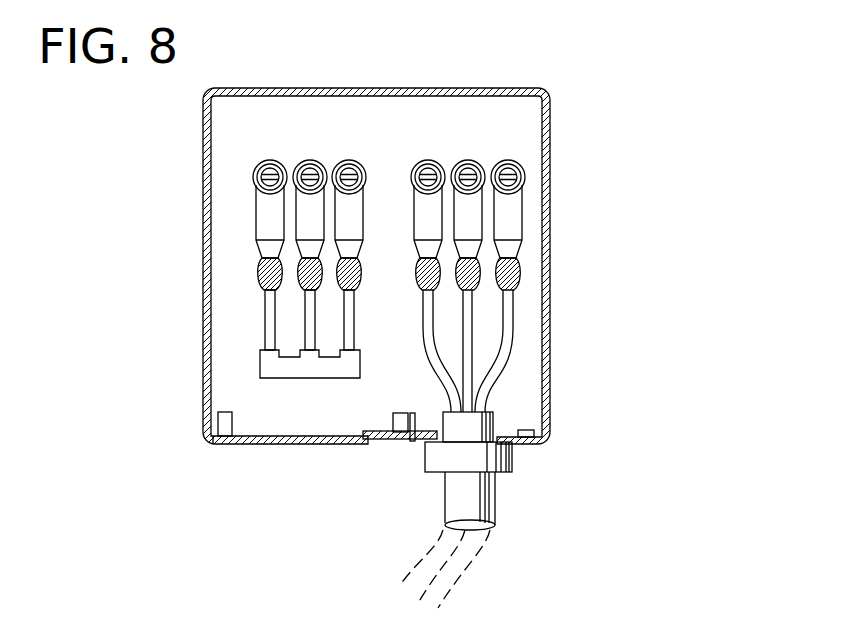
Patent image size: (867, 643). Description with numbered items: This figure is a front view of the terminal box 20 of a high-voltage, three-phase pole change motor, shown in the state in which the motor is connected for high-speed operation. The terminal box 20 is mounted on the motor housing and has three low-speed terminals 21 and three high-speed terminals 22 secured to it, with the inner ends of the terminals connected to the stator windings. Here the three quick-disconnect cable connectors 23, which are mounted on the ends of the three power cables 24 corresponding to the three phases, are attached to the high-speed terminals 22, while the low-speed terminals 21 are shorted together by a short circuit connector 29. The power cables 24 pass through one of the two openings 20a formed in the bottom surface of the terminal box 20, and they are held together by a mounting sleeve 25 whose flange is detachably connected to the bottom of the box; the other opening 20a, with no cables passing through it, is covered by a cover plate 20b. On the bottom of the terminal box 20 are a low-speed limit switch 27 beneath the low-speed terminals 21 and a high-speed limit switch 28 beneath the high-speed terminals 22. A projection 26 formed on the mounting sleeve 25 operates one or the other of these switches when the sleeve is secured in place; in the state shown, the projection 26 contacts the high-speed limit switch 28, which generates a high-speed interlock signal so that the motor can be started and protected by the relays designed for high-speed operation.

The terminal box 20 is at (498, 88).
The opening 20a is at (235, 433).
The cover plate 20b is at (272, 445).
The low-speed terminal 21 is at (433, 226).
The high-speed terminal 22 is at (443, 257).
The quick-disconnect cable connector 23 is at (470, 222).
The power cable 24 is at (422, 338).
The mounting sleeve 25 is at (513, 462).
The projection 26 is at (418, 428).
The low-speed limit switch 27 is at (212, 436).
The high-speed limit switch 28 is at (394, 414).
The short circuit connector 29 is at (260, 358).